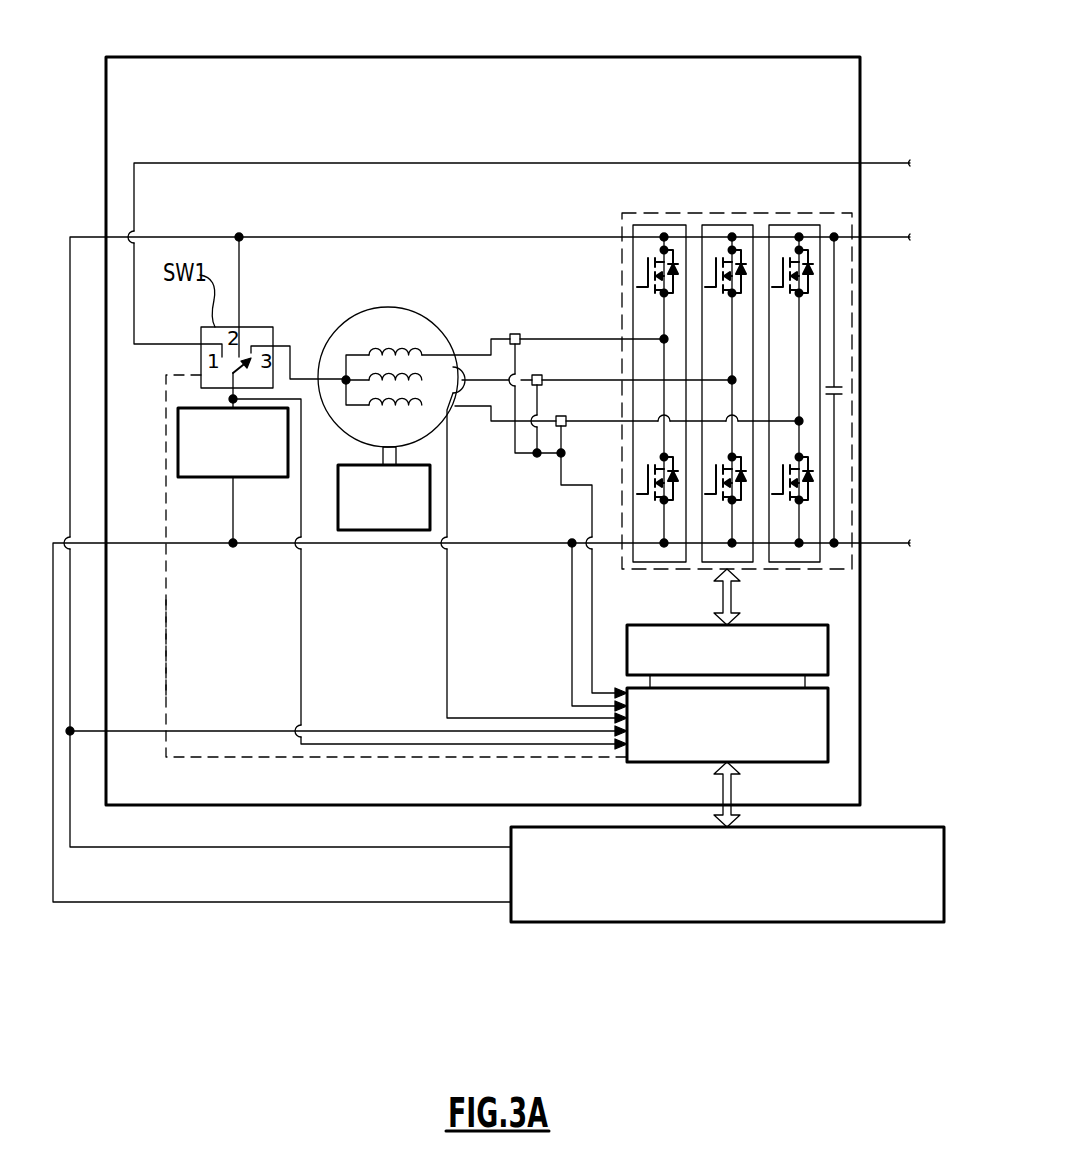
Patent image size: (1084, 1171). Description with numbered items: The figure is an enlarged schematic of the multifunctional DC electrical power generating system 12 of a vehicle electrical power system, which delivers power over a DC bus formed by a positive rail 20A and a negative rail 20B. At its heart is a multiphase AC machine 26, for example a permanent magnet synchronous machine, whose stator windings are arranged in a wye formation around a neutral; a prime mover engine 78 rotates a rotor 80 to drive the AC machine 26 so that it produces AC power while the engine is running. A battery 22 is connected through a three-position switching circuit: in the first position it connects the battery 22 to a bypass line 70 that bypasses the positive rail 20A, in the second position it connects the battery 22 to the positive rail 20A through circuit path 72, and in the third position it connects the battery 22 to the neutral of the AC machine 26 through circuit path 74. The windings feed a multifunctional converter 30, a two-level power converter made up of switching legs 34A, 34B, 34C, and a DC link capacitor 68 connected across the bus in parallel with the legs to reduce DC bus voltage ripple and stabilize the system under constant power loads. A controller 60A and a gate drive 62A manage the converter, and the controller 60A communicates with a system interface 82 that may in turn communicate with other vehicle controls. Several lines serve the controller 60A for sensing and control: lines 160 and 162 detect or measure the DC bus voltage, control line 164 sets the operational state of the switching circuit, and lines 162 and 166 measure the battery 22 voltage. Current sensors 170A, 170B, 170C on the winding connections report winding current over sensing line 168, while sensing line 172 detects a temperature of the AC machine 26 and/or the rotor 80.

The DC electrical power generating system 12 is at (678, 57).
The bypass line 70 is at (322, 163).
The positive rail 20A is at (877, 239).
The negative rail 20B is at (882, 543).
The circuit path 72 is at (239, 287).
The circuit path 74 is at (283, 346).
The battery 22 is at (212, 477).
The line 160 is at (208, 730).
The control line 164 is at (166, 627).
The line 166 is at (301, 648).
The AC machine 26 is at (393, 307).
The rotor 80 is at (396, 455).
The prime mover engine 78 is at (360, 465).
The current sensor 170A is at (516, 312).
The current sensor 170B is at (538, 354).
The current sensor 170C is at (562, 395).
The sensing line 168 is at (592, 615).
The line 162 is at (572, 645).
The sensing line 172 is at (447, 670).
The multifunctional converter 30 is at (622, 225).
The switching leg 34A is at (660, 225).
The switching leg 34B is at (735, 225).
The switching leg 34C is at (805, 225).
The DC link capacitor 68 is at (842, 390).
The gate drive 62A is at (758, 625).
The controller 60A is at (752, 762).
The system interface 82 is at (553, 922).